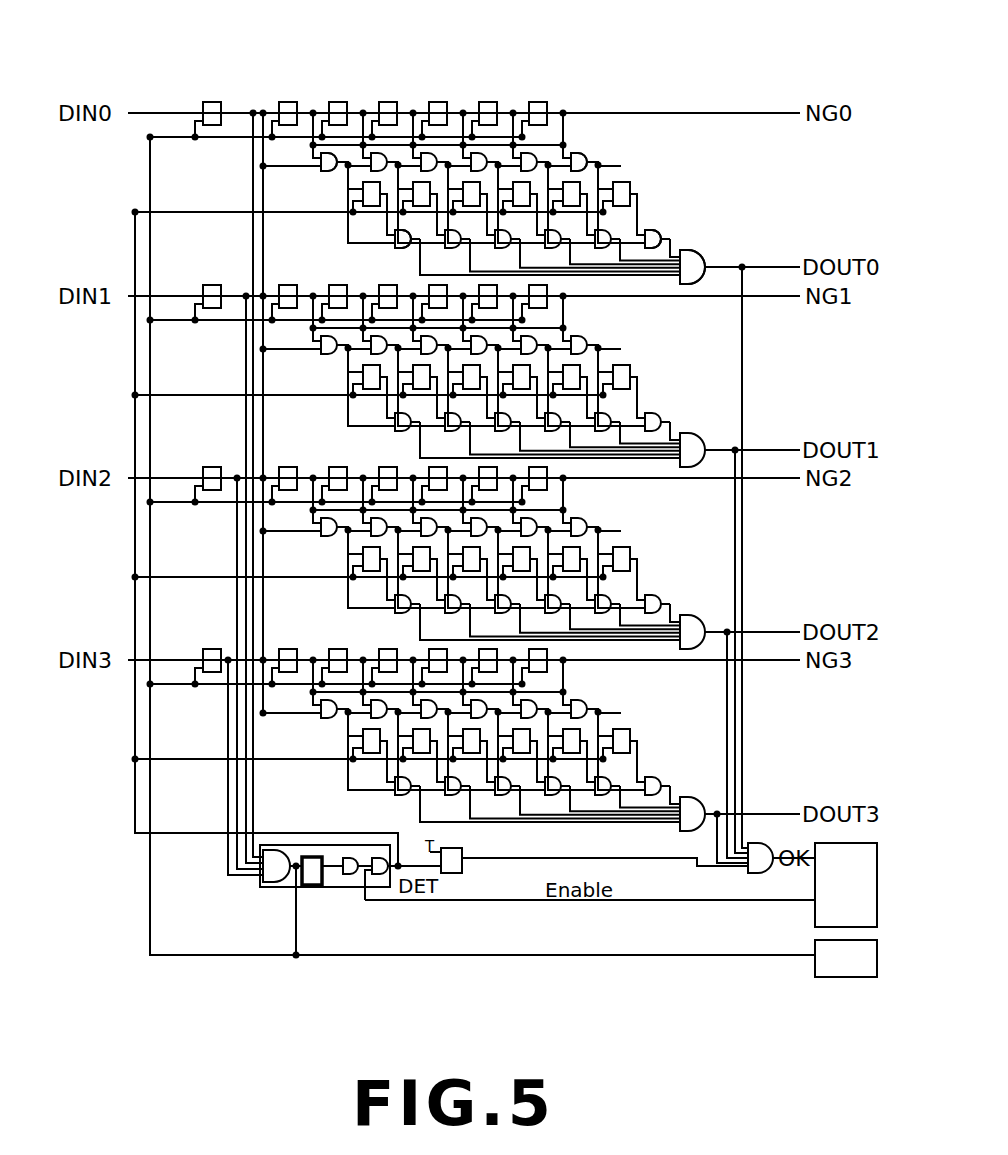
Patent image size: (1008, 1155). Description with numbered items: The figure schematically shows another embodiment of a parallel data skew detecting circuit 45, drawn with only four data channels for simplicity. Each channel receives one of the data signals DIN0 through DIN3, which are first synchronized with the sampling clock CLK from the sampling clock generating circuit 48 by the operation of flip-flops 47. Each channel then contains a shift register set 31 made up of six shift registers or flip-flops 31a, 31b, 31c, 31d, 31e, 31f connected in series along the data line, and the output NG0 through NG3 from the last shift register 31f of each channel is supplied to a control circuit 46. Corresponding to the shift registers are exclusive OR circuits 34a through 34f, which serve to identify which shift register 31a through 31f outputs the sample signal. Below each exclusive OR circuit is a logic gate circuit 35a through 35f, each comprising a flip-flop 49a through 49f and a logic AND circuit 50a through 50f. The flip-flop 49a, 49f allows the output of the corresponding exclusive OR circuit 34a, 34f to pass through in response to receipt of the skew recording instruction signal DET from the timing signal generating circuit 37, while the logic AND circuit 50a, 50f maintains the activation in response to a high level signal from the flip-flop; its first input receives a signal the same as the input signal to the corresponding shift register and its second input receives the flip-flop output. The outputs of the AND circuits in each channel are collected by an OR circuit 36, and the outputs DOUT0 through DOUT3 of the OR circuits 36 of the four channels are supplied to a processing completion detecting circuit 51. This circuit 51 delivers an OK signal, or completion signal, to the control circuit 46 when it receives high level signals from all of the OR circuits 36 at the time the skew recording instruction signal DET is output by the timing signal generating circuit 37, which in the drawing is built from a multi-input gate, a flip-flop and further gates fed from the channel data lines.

The parallel data skew detecting circuit 45 is at (580, 66).
The flip-flops 47 is at (208, 102).
The shift register set 31 is at (520, 104).
The shift register 31a is at (280, 102).
The shift register 31b is at (338, 102).
The shift register 31c is at (388, 102).
The shift register 31d is at (438, 102).
The shift register 31e is at (488, 102).
The last shift register 31f is at (542, 106).
The exclusive OR circuit 34a is at (318, 171).
The exclusive OR circuit 34f is at (577, 164).
The flip-flop 49a is at (368, 208).
The flip-flop 49f is at (632, 180).
The logic AND circuit 50a is at (398, 242).
The logic AND circuit 50f is at (655, 230).
The logic gate circuit 35a is at (265, 256).
The logic gate circuit 35f is at (703, 148).
The OR circuit 36 is at (704, 260).
The timing signal generating circuit 37 is at (268, 890).
The processing completion detecting circuit 51 is at (750, 834).
The control circuit 46 is at (815, 926).
The sampling clock generating circuit 48 is at (815, 976).